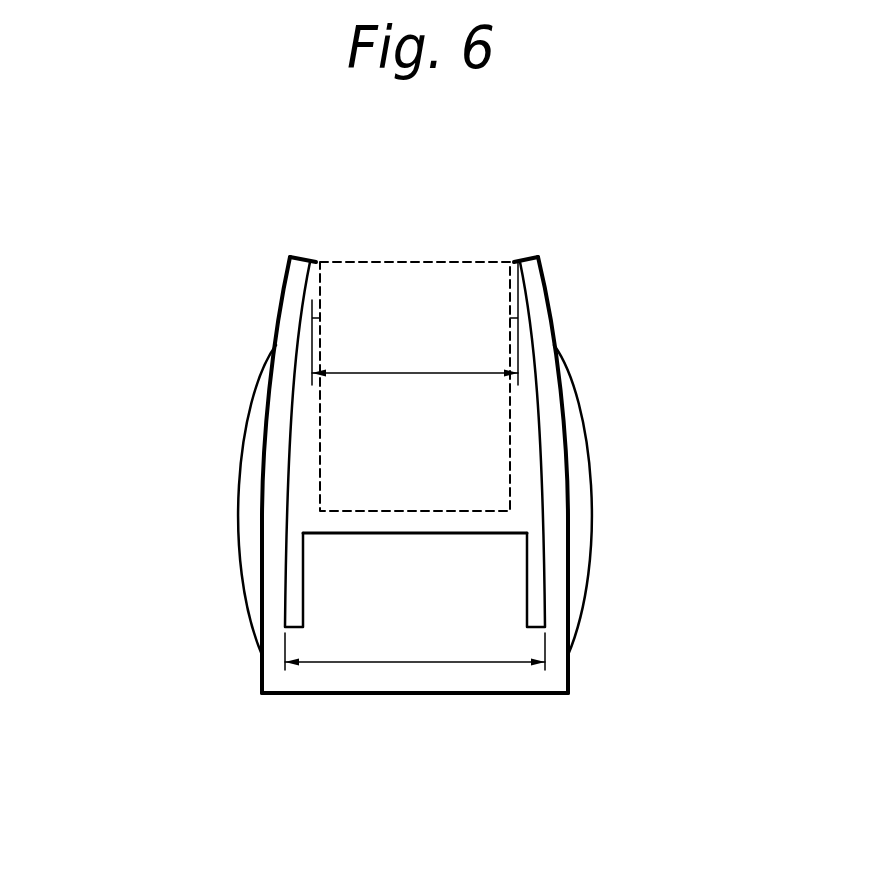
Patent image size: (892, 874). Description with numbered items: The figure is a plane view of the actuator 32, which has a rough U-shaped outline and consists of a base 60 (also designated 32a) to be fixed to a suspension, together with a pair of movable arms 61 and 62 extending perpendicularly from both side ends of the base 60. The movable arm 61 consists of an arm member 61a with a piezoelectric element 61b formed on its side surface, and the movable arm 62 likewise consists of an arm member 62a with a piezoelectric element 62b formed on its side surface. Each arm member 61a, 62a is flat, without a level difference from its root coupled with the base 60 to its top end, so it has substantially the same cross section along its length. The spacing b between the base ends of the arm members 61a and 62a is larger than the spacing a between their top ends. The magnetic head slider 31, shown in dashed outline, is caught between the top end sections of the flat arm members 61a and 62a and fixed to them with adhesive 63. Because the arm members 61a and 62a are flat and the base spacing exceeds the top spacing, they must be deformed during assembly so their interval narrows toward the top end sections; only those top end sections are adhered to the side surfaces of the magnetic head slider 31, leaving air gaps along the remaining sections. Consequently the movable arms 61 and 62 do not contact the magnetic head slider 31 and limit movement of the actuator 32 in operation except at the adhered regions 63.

The actuator 32 is at (636, 252).
The magnetic head slider 31 is at (433, 258).
The adhesive 63 is at (316, 258).
The movable arm 62 is at (112, 423).
The arm member 62a is at (273, 438).
The piezoelectric element 62b is at (240, 493).
The movable arm 61 is at (688, 412).
The arm member 61a is at (552, 440).
The piezoelectric element 61b is at (587, 487).
The base 60 is at (425, 675).
The base 32a is at (415, 652).